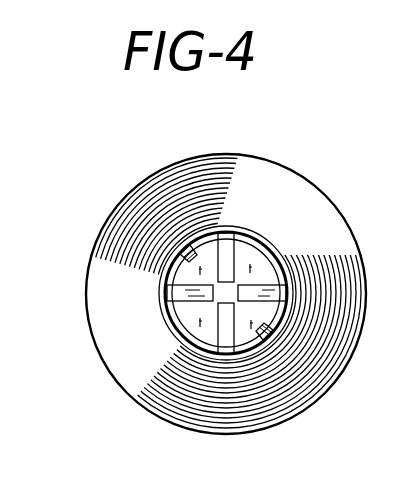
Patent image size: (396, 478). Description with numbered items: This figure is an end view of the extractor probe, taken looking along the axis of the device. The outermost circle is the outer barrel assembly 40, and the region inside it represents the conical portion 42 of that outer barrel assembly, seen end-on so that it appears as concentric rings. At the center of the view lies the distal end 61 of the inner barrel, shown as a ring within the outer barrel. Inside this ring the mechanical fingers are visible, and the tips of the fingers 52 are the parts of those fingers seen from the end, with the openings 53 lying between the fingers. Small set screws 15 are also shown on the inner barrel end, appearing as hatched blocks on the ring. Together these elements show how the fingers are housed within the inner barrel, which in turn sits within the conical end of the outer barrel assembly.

The outer barrel assembly 40 is at (278, 196).
The tips of the fingers 52 is at (265, 283).
The conical portion 42 is at (332, 228).
The distal end of the inner barrel 61 is at (211, 264).
The openings 53 is at (175, 266).
The set screws 15 is at (185, 256).